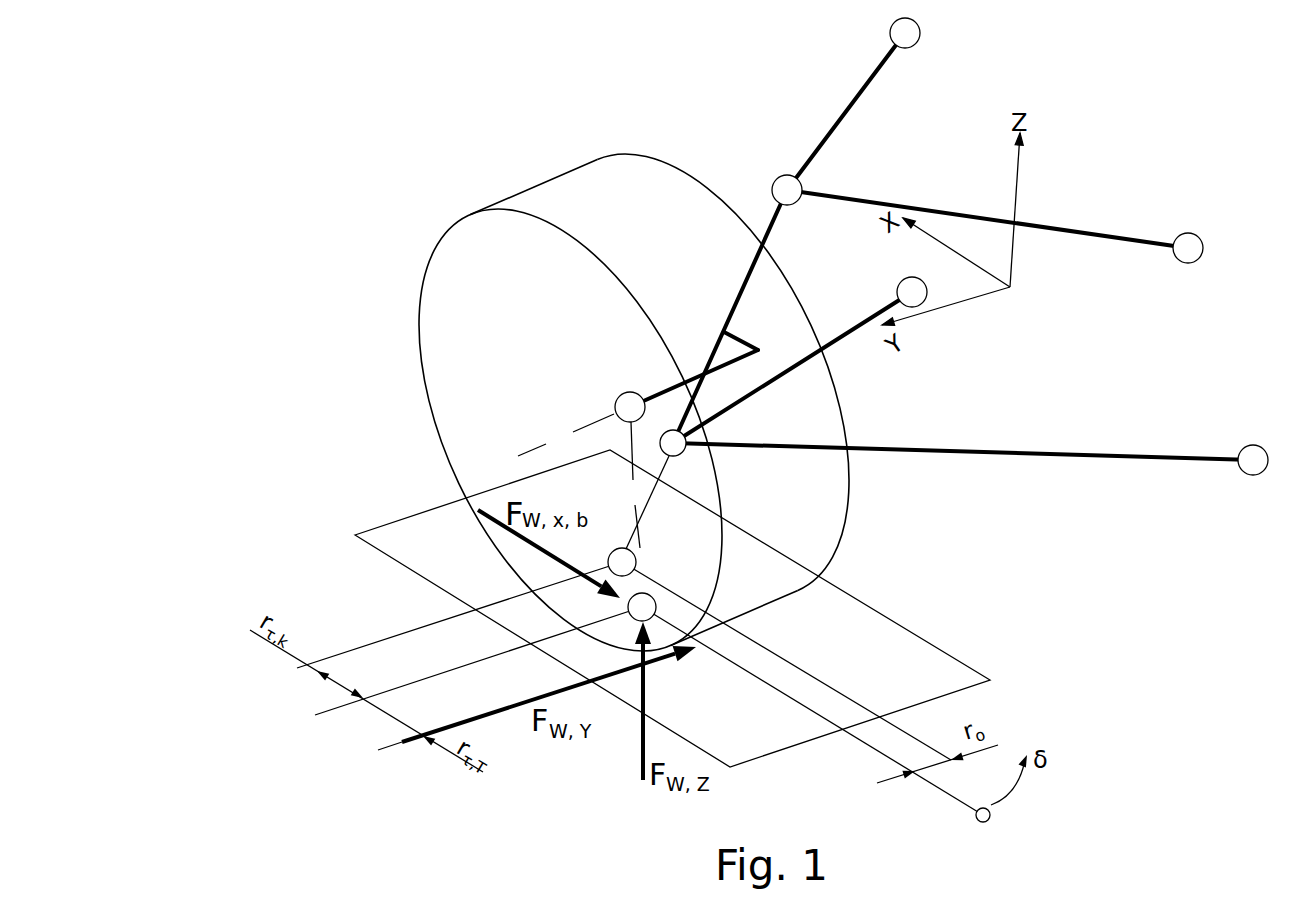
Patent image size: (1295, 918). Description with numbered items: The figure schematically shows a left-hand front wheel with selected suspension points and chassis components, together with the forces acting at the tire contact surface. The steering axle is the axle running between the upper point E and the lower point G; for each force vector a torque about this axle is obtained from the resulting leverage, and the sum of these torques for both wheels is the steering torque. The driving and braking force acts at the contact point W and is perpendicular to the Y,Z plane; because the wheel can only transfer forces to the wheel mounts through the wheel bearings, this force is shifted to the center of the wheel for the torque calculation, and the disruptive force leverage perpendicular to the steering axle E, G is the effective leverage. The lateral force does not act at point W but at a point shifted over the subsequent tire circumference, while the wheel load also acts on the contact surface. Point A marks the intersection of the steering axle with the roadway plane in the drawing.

The upper steering axle point E is at (779, 178).
The lower steering axle point G is at (680, 457).
The intersection point of steering axis with road plane A is at (633, 554).
The tire contact point W is at (660, 600).